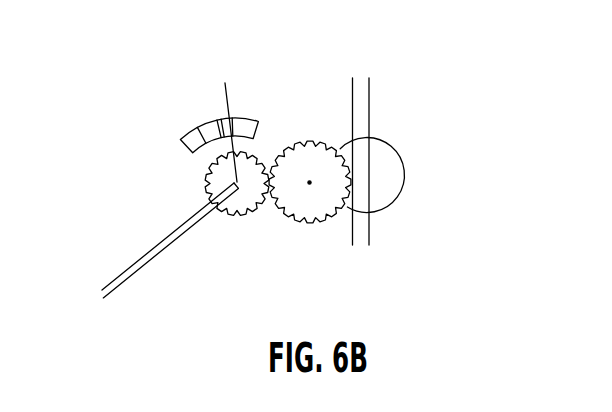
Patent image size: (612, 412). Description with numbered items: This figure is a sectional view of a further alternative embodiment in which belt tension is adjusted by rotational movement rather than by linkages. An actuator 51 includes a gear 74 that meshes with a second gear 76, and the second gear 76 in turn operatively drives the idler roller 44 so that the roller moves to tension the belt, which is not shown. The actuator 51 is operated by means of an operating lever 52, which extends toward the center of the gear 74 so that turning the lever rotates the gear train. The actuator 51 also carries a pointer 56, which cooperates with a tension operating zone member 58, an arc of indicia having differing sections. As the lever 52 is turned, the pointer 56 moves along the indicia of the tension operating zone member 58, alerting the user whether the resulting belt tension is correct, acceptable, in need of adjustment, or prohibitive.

The idler roller 44 is at (404, 186).
The actuator 51 is at (233, 148).
The operating lever 52 is at (135, 248).
The pointer 56 is at (186, 108).
The tension operating zone member 58 is at (258, 90).
The gear 74 is at (248, 203).
The second gear 76 is at (318, 225).